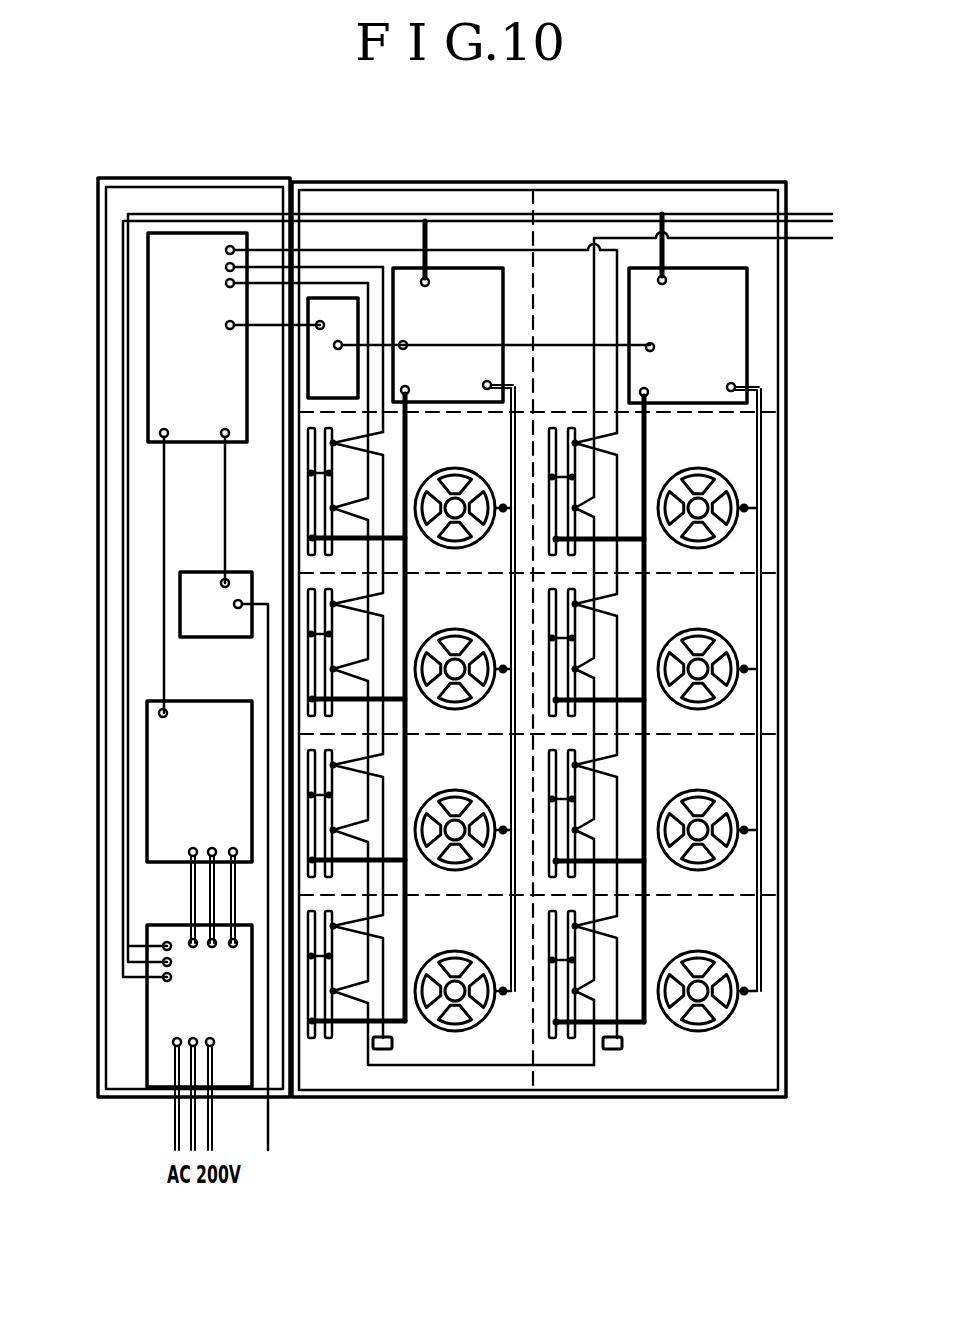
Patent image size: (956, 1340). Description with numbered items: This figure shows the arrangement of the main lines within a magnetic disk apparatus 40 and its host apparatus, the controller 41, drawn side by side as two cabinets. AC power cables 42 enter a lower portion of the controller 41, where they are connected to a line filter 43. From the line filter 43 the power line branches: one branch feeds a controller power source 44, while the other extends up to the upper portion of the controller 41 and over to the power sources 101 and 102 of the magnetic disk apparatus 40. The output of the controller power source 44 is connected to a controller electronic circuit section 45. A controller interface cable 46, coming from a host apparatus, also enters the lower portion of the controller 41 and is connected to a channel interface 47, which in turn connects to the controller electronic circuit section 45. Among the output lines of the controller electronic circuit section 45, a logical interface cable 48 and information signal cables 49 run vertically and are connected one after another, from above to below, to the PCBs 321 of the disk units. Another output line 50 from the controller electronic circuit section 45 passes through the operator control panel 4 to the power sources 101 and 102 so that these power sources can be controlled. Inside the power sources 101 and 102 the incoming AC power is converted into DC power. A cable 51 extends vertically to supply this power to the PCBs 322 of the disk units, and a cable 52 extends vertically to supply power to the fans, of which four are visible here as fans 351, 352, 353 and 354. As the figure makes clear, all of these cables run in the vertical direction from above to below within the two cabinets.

The operator control panel 4 is at (348, 308).
The magnetic disk apparatus 40 is at (635, 183).
The controller 41 is at (188, 178).
The AC power cables 42 is at (175, 1129).
The line filter 43 is at (147, 1020).
The controller power source 44 is at (147, 811).
The controller electronic circuit section 45 is at (148, 331).
The controller interface cable 46 is at (270, 1124).
The channel interface 47 is at (198, 572).
The logical interface cable 48 is at (318, 283).
The information signal cables 49 is at (350, 273).
The output line 50 is at (258, 328).
The cable 51 is at (645, 606).
The cable 52 is at (762, 472).
The power source 101 is at (487, 290).
The power source 102 is at (716, 290).
The PCBs 321 is at (330, 1043).
The PCBs 322 is at (313, 1043).
The fan 351 is at (727, 484).
The fan 352 is at (722, 642).
The fan 353 is at (724, 804).
The fan 354 is at (733, 1023).